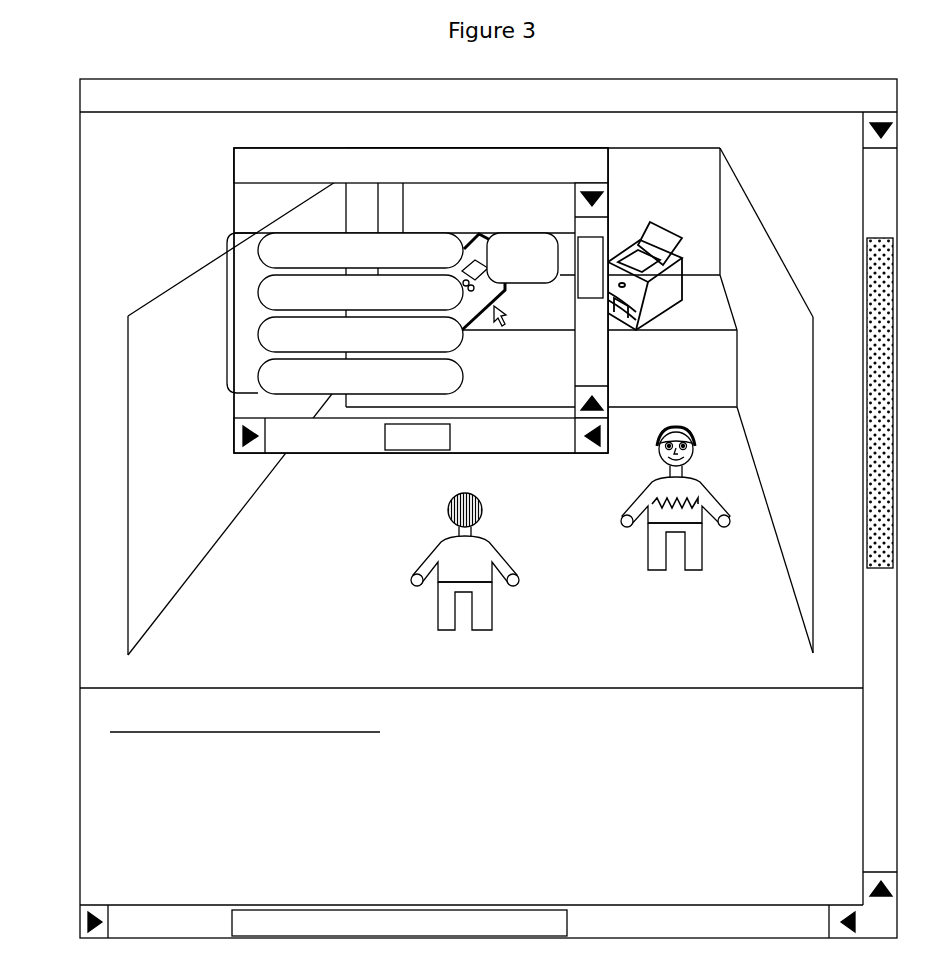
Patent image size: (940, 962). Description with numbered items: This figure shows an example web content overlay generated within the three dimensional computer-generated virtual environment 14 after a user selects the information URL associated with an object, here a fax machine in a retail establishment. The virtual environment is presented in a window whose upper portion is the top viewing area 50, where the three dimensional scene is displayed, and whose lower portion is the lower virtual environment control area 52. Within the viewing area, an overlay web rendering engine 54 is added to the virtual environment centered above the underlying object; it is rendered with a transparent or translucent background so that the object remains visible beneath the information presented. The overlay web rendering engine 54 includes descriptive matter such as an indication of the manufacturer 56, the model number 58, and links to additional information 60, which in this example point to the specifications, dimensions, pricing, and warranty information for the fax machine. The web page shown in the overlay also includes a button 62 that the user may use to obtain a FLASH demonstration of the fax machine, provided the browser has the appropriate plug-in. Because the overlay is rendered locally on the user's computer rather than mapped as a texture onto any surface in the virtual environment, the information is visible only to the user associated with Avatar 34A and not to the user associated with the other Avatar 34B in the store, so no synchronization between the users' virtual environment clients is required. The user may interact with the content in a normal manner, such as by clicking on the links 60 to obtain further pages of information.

The virtual environment 14 is at (176, 158).
The top viewing area 50 is at (95, 357).
The lower virtual environment control area 52 is at (88, 806).
The overlay web rendering engine 54 is at (403, 286).
The manufacturer 56 is at (286, 166).
The model number 58 is at (512, 208).
The links to additional information 60 is at (228, 233).
The button 62 is at (550, 242).
The Avatar 34A is at (503, 600).
The Avatar 34B is at (716, 582).